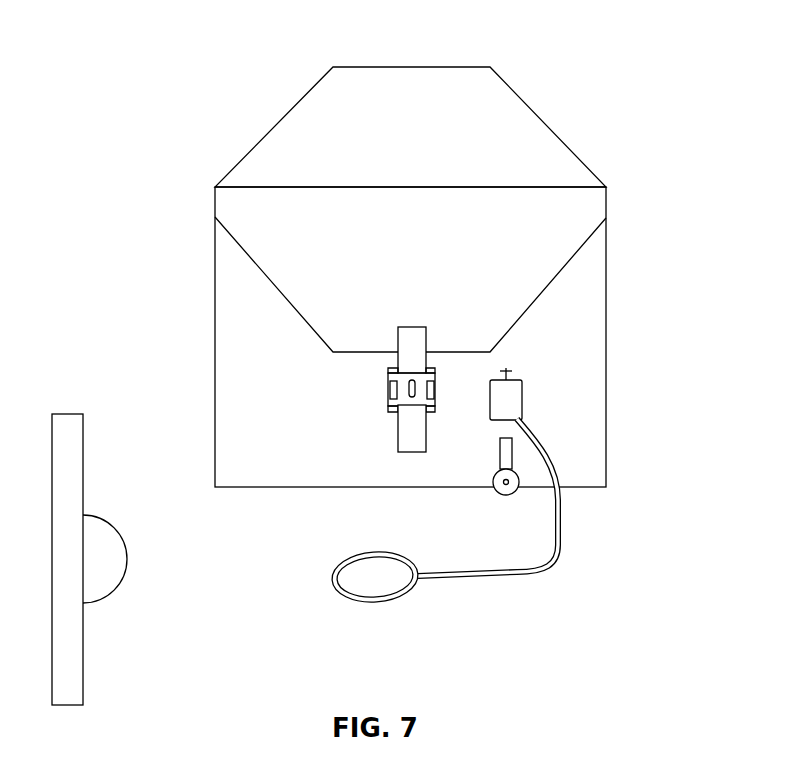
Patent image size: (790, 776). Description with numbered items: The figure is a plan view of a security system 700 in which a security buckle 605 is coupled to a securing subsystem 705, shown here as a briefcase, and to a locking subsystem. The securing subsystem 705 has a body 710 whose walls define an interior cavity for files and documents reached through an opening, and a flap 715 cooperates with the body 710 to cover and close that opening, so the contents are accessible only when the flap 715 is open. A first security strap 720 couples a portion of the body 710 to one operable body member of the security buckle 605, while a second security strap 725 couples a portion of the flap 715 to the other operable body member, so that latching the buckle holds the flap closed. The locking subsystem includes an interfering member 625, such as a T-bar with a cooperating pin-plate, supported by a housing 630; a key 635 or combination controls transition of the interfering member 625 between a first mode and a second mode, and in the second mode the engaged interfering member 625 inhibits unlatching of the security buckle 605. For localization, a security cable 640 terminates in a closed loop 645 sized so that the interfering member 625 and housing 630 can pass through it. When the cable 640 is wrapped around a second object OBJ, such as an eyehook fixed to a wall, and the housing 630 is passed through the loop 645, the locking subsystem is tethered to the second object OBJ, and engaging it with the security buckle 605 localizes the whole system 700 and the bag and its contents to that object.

The security system 700 is at (161, 36).
The securing subsystem 705 is at (607, 309).
The body 710 is at (305, 438).
The flap 715 is at (436, 272).
The first security strap 720 is at (407, 433).
The second security strap 725 is at (417, 338).
The security buckle 605 is at (380, 368).
The interfering member 625 is at (506, 370).
The housing 630 is at (522, 393).
The key 635 is at (506, 495).
The security cable 640 is at (561, 556).
The closed loop 645 is at (343, 576).
The second object OBJ is at (122, 582).